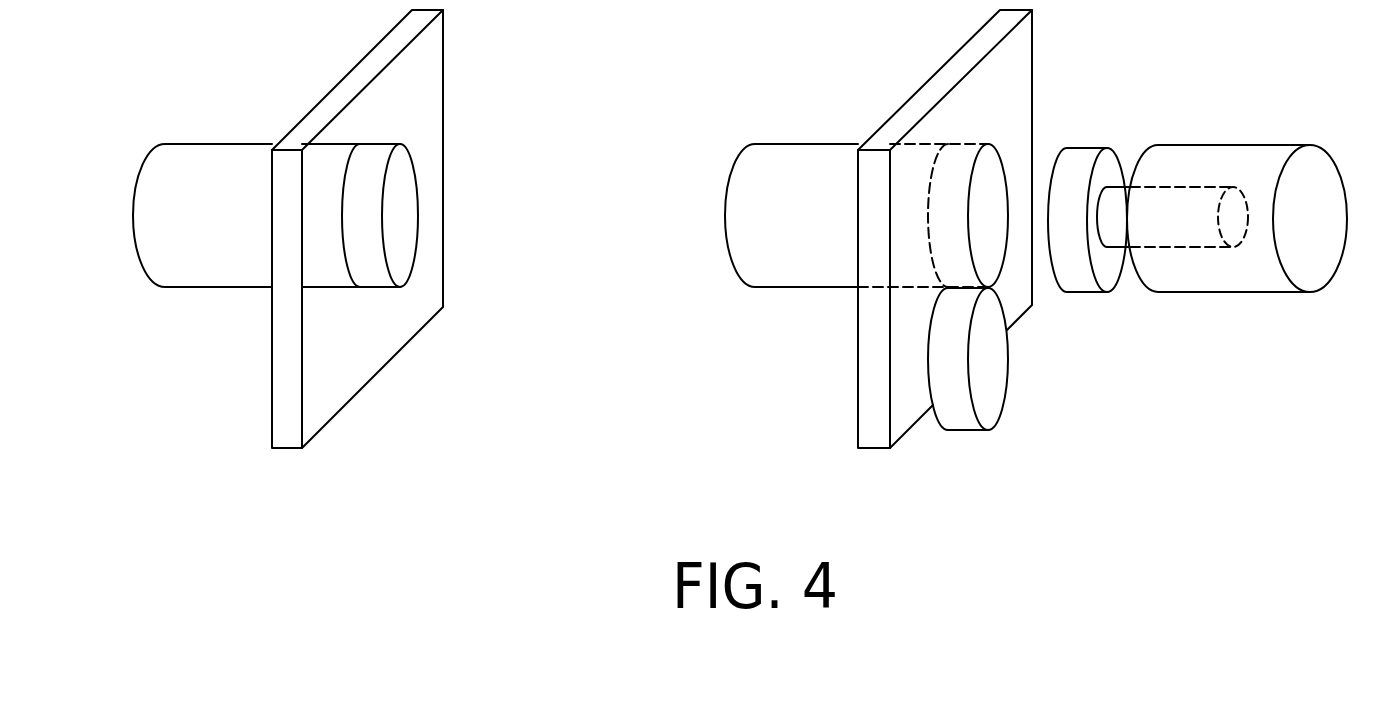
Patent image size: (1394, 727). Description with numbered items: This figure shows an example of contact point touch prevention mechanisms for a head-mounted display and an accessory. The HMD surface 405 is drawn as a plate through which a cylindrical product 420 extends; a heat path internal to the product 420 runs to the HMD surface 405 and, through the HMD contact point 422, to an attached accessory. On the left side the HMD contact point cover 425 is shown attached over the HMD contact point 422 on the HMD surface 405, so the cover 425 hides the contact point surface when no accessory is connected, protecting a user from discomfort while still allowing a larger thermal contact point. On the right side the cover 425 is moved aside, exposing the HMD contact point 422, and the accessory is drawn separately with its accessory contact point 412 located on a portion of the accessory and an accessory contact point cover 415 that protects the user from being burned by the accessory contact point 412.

The HMD surface 405 is at (472, 62).
The product 420 is at (213, 270).
The HMD contact point cover 425 is at (405, 232).
The HMD contact point 422 is at (978, 233).
The accessory contact point 412 is at (1107, 292).
The accessory contact point cover 415 is at (1220, 163).